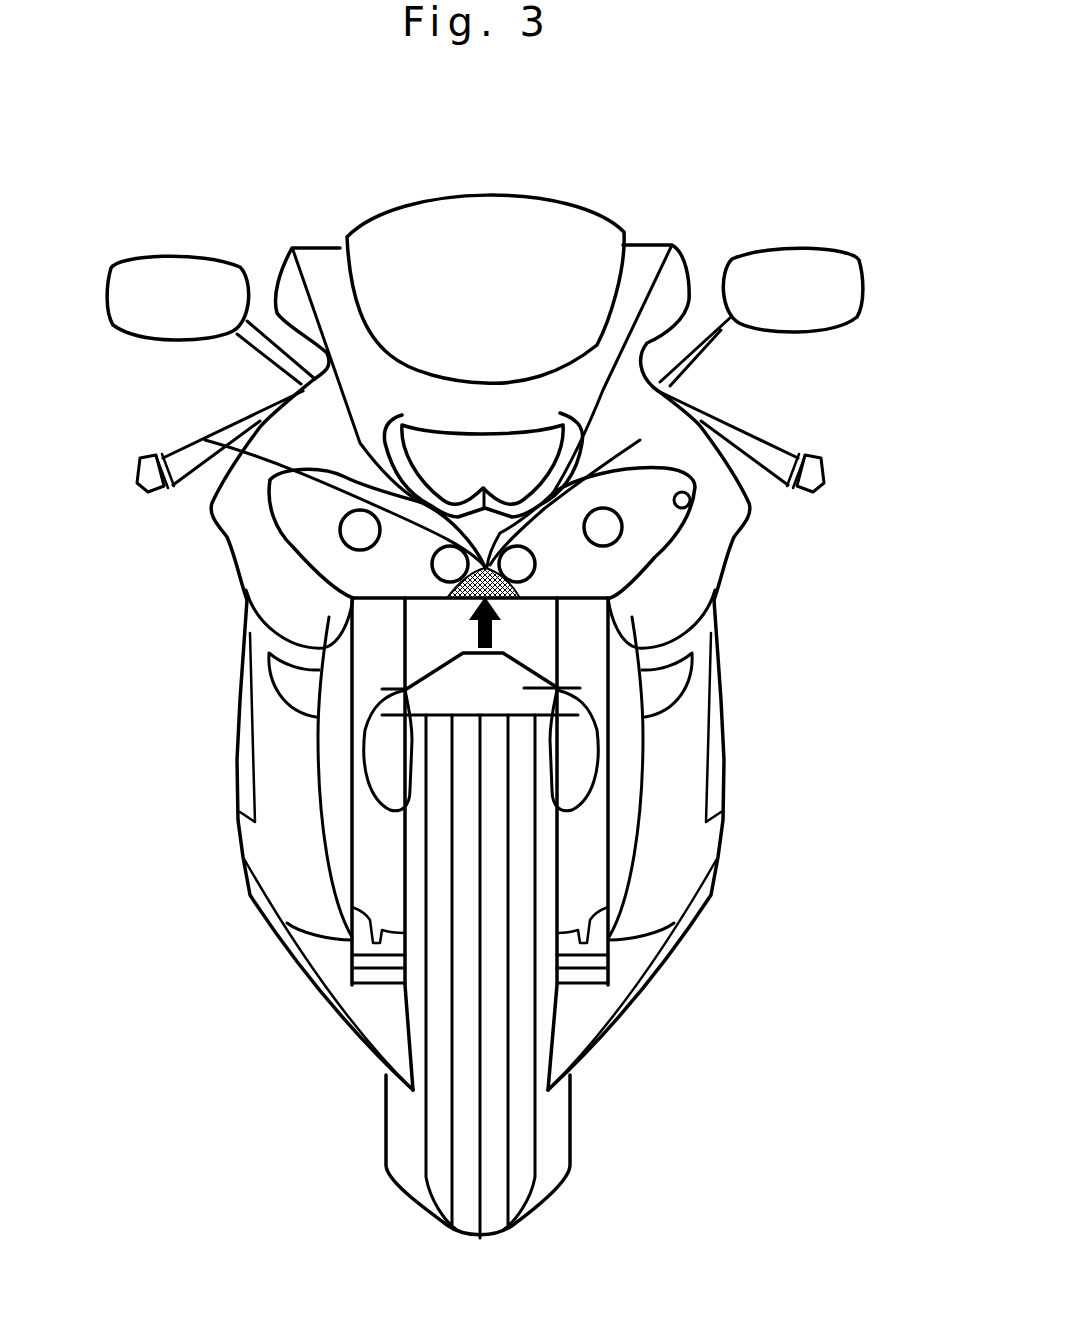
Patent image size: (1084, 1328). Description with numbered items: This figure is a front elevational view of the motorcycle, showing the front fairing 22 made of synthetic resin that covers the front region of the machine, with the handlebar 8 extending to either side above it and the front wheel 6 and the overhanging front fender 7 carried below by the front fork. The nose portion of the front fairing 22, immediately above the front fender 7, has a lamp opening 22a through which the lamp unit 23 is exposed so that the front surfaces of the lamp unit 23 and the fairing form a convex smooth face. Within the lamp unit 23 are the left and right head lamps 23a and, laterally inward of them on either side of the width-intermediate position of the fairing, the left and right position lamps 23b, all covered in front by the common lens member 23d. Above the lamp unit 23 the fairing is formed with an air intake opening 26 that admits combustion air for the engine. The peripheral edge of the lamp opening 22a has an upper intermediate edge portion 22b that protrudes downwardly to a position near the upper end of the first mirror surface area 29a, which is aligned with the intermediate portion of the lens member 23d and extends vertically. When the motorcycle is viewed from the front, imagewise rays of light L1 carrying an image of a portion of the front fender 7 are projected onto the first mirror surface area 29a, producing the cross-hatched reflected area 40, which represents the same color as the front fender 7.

The front fairing 22 is at (638, 268).
The lamp opening 22a is at (692, 499).
The upper intermediate edge portion 22b is at (400, 500).
The air intake opening 26 is at (574, 436).
The handlebar 8 is at (797, 451).
The lamp unit 23 is at (642, 542).
The head lamps 23a is at (343, 531).
The position lamps 23b is at (433, 565).
The lens member 23d is at (445, 542).
The first mirror surface area 29a is at (520, 578).
The reflected area 40 is at (540, 588).
The imagewise rays of light L1 is at (492, 630).
The front fender 7 is at (524, 690).
The front wheel 6 is at (497, 1117).